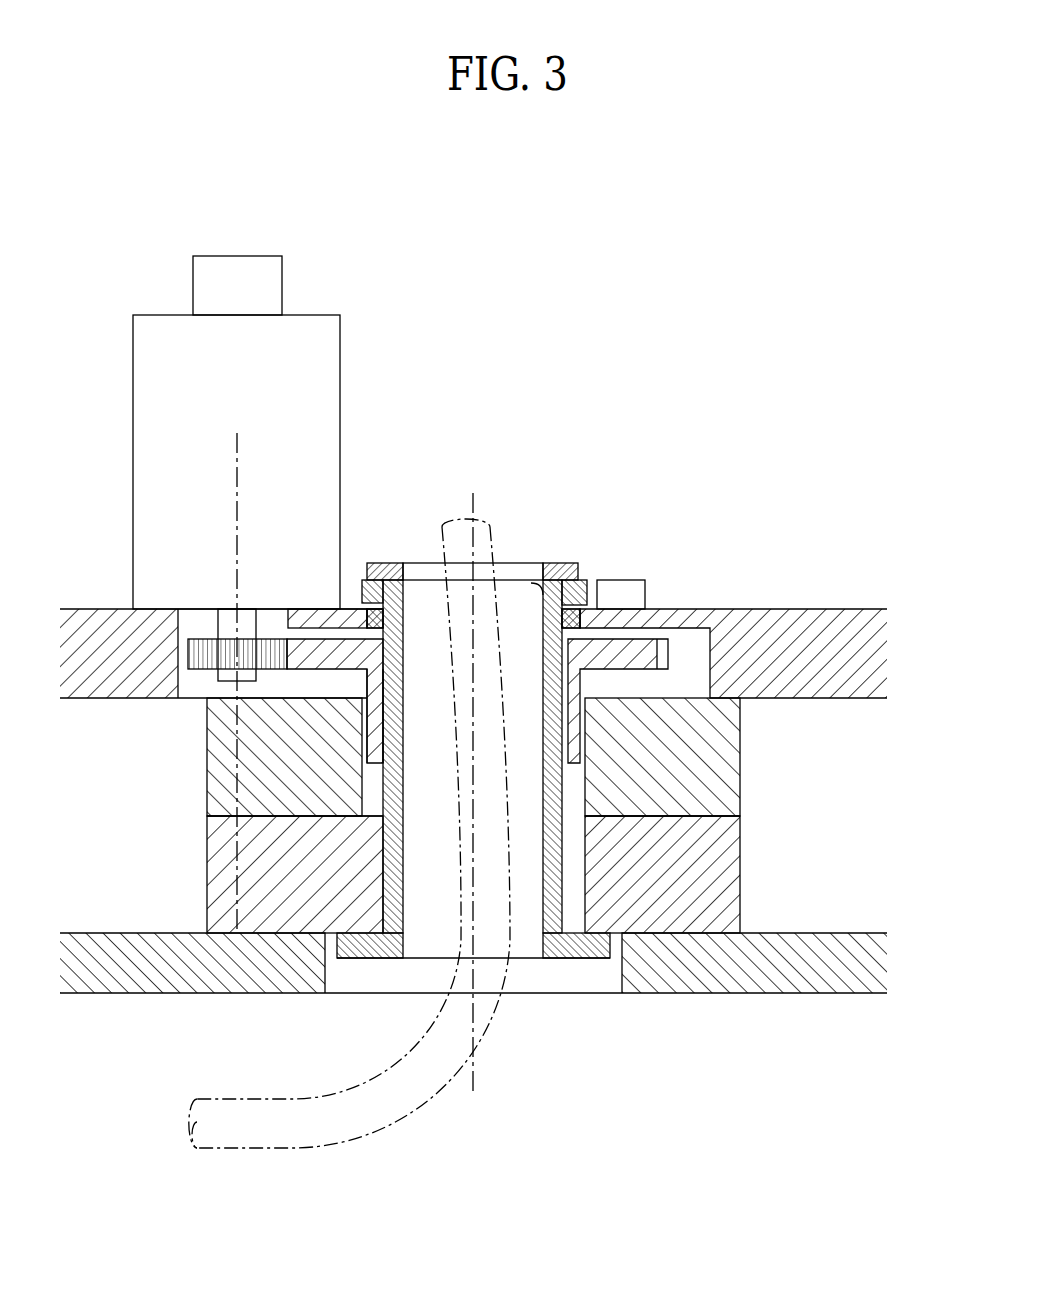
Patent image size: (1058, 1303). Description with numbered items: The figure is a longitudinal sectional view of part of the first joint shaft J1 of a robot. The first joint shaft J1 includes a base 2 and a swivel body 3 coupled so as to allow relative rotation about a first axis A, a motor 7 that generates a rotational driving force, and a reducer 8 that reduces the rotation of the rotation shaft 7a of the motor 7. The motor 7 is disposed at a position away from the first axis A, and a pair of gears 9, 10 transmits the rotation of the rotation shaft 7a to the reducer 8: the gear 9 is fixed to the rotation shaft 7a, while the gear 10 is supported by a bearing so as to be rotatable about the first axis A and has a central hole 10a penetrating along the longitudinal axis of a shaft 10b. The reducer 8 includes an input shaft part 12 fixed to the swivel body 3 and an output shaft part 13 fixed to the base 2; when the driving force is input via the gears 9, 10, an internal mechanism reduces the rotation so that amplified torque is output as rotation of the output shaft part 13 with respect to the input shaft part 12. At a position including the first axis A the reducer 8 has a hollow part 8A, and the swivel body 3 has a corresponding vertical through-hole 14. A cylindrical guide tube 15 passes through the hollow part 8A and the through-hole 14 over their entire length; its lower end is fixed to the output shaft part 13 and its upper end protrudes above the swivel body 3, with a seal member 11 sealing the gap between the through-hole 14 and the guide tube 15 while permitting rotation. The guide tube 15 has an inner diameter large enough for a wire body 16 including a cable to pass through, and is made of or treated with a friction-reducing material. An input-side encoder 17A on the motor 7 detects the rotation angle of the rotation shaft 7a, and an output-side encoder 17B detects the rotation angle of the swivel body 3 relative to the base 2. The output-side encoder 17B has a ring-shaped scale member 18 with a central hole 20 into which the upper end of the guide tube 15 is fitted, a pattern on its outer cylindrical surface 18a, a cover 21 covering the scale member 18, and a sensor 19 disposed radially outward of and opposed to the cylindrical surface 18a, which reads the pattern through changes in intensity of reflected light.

The base 2 is at (862, 933).
The swivel body 3 is at (842, 609).
The motor 7 is at (133, 409).
The rotation shaft 7a is at (215, 627).
The reducer 8 is at (758, 816).
The hollow part 8A is at (580, 867).
The gear 9 is at (203, 670).
The gear 10 is at (283, 650).
The central hole 10a is at (380, 683).
The shaft 10b is at (365, 740).
The seal member 11 is at (573, 627).
The input shaft part 12 is at (745, 757).
The output shaft part 13 is at (745, 866).
The through-hole 14 is at (368, 619).
The guide tube 15 is at (527, 960).
The wire body 16 is at (347, 1140).
The input-side encoder 17A is at (228, 238).
The output-side encoder 17B is at (580, 540).
The scale member 18 is at (370, 585).
The cylindrical surface 18a is at (590, 593).
The sensor 19 is at (645, 597).
The central hole 20 is at (540, 583).
The cover 21 is at (413, 563).
The first axis A is at (478, 1078).
The first joint shaft J1 is at (479, 372).